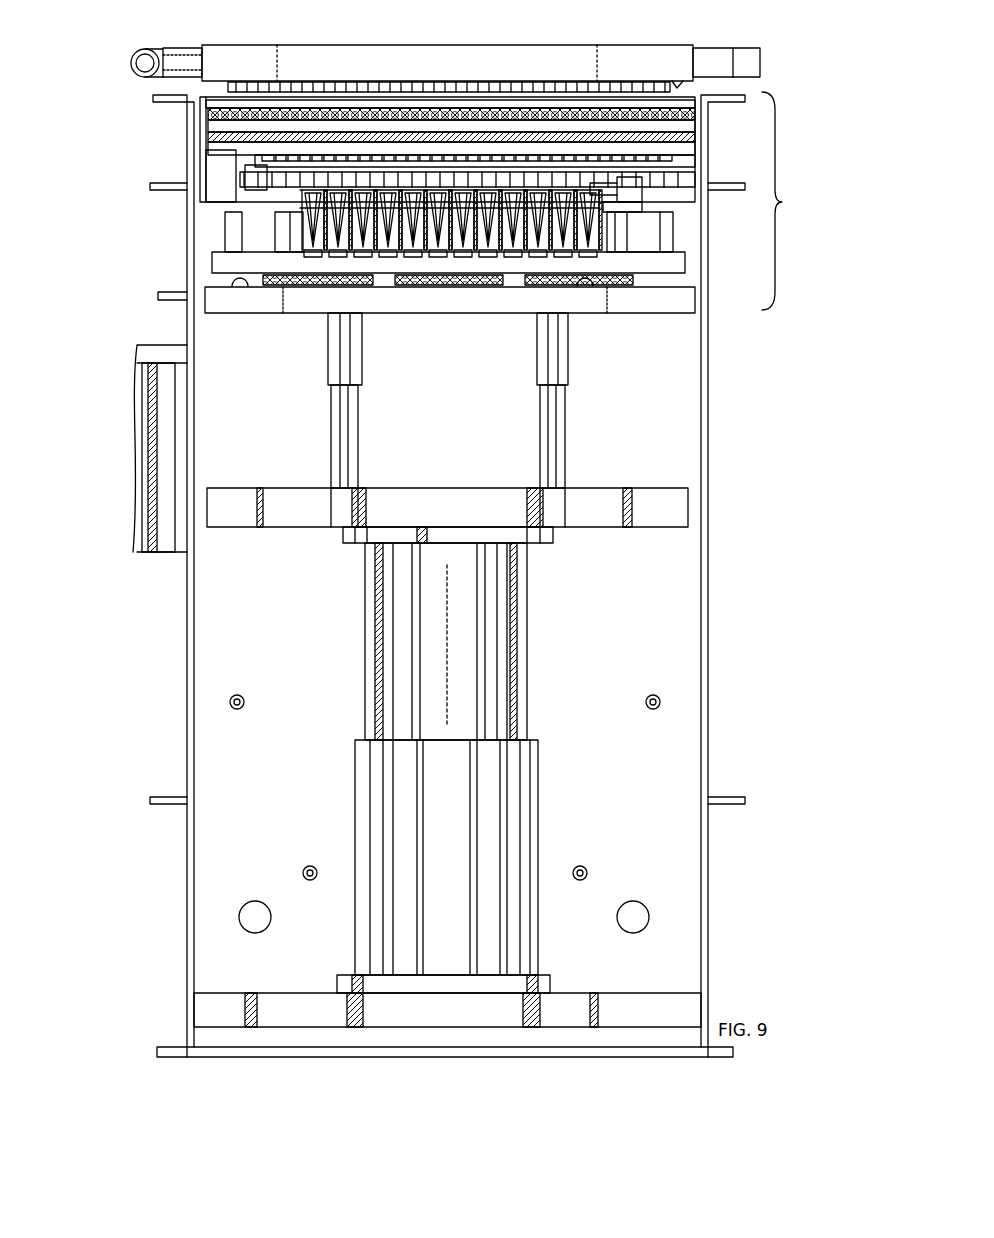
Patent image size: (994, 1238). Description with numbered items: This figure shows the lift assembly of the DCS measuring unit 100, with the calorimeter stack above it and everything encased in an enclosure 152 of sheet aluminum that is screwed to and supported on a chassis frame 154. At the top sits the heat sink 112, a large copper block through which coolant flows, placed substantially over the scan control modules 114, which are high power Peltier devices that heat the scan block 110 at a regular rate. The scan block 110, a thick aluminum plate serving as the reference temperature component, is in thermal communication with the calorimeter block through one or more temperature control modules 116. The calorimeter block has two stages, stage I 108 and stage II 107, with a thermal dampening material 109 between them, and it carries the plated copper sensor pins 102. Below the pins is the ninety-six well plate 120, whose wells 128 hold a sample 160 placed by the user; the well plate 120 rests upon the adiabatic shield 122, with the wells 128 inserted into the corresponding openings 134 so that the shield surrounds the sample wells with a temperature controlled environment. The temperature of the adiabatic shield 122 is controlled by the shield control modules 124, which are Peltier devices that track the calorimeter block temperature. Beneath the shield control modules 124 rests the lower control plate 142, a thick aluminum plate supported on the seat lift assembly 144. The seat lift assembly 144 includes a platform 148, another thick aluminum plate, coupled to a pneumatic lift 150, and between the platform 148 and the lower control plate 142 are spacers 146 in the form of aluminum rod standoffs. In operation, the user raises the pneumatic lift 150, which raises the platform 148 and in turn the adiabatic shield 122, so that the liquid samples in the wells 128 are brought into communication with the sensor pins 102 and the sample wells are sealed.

The DCS measuring unit 100 is at (790, 201).
The sensor pins 102 is at (593, 183).
The stage II 107 is at (480, 150).
The stage I 108 is at (300, 128).
The thermal dampening material 109 is at (417, 137).
The scan block 110 is at (205, 110).
The heat sink 112 is at (658, 72).
The scan control modules 114 is at (245, 82).
The temperature control modules 116 is at (240, 122).
The 96 well plate 120 is at (280, 182).
The adiabatic shield 122 is at (637, 256).
The shield control modules 124 is at (640, 287).
The wells 128 is at (300, 225).
The openings 134 is at (525, 193).
The lower control plate 142 is at (583, 308).
The seat lift assembly 144 is at (548, 647).
The spacers 146 is at (365, 340).
The platform 148 is at (390, 487).
The pneumatic lift 150 is at (535, 598).
The enclosure 152 is at (708, 708).
The chassis frame 154 is at (640, 1007).
The sample 160 is at (312, 236).